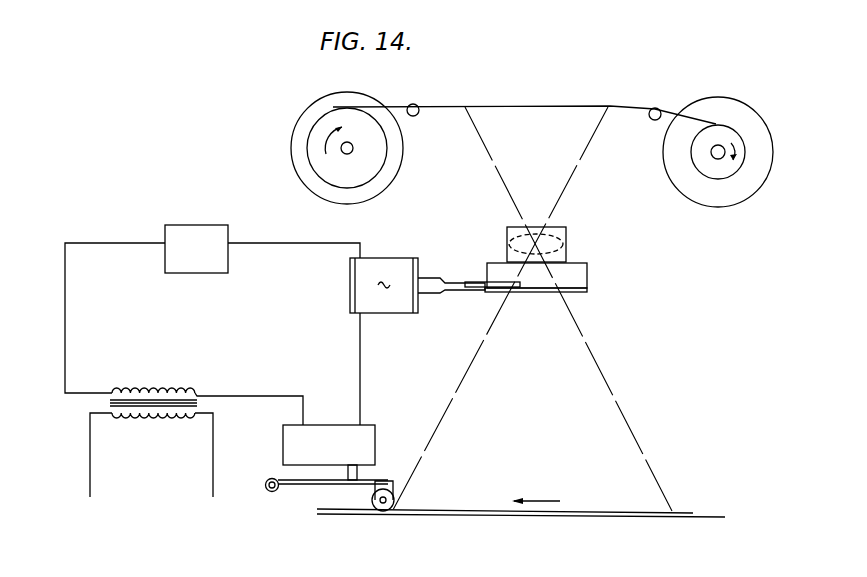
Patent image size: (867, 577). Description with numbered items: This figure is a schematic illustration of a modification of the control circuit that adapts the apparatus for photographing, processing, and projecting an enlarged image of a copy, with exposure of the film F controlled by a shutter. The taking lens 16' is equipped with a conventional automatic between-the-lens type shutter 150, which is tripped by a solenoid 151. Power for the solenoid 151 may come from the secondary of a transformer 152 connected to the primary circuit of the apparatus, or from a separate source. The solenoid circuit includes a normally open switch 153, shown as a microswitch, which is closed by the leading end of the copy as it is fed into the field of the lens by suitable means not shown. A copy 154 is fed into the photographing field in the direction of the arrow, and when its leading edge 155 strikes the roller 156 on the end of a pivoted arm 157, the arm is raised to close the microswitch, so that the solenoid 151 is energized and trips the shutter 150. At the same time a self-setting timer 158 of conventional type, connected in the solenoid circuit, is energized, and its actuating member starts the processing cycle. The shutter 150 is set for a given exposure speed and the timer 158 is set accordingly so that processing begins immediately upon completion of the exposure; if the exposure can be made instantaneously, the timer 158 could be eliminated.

The film F is at (620, 105).
The taking lens 16' is at (562, 244).
The shutter 150 is at (587, 278).
The solenoid 151 is at (400, 308).
The transformer 152 is at (197, 403).
The switch 153 is at (375, 437).
The copy 154 is at (590, 510).
The leading edge 155 is at (395, 510).
The roller 156 is at (393, 483).
The pivoted arm 157 is at (300, 490).
The self-setting timer 158 is at (220, 268).